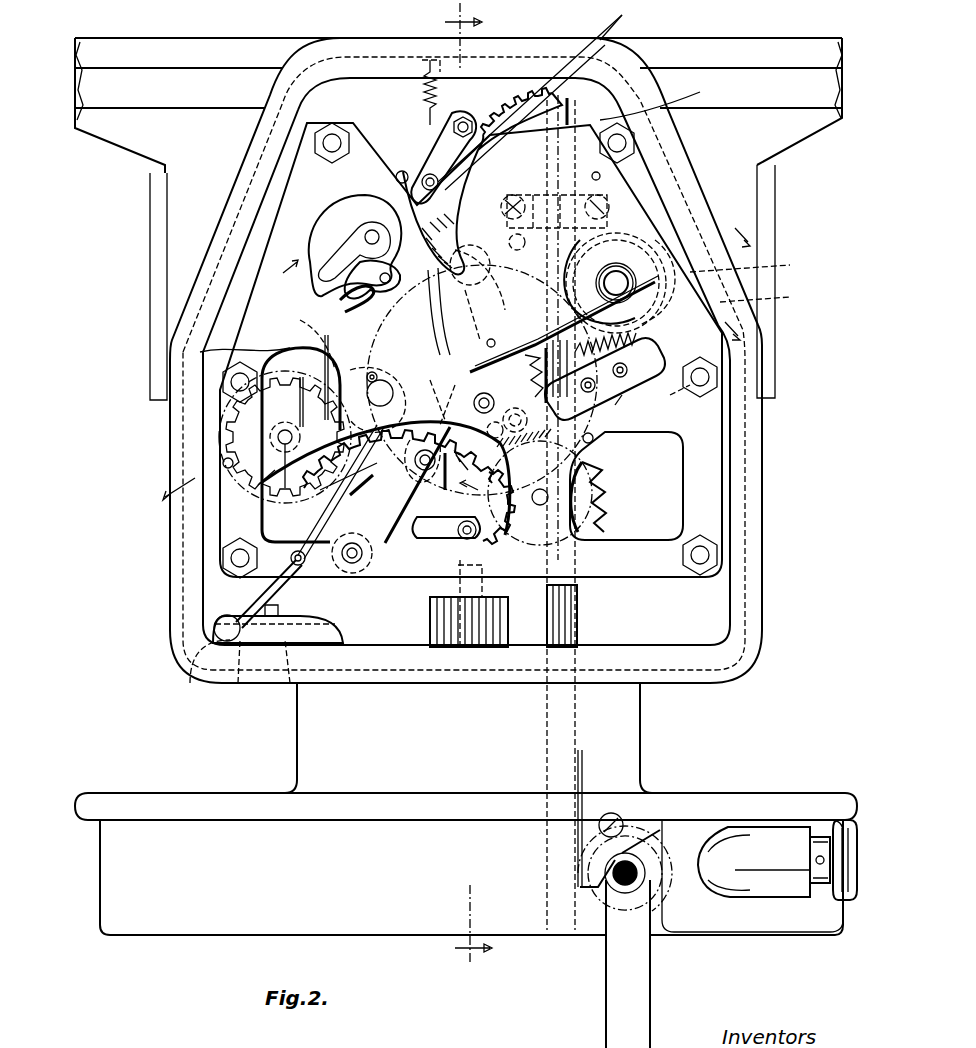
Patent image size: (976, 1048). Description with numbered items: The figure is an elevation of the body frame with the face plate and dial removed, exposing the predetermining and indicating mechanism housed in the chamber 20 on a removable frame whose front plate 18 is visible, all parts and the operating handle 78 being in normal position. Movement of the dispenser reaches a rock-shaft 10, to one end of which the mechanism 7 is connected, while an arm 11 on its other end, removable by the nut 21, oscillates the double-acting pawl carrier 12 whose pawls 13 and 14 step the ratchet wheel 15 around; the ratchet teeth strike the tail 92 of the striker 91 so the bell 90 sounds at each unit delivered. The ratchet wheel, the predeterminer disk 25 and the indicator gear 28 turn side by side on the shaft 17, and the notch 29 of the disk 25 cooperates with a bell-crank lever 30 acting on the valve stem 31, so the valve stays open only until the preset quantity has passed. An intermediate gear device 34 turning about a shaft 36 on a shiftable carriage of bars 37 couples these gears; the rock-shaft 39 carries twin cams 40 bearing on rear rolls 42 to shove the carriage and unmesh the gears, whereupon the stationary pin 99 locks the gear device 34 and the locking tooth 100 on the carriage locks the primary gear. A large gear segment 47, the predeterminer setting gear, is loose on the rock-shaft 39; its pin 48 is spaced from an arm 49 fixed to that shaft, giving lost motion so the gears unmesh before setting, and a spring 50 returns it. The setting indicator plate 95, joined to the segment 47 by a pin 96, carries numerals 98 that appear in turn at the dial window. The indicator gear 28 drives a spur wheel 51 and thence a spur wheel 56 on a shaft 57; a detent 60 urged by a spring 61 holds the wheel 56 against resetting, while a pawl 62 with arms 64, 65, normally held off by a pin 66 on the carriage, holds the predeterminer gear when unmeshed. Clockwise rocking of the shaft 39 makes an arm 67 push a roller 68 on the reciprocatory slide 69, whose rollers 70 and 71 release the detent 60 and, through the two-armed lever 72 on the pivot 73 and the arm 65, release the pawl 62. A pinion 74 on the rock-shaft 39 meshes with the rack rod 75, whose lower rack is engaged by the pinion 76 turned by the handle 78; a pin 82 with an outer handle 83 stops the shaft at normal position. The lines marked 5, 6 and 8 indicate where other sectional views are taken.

The section line 5- 5 is at (458, 494).
The section line 6- 6 is at (449, 379).
The mechanism 7 is at (374, 373).
The section line 8- 8 is at (734, 338).
The rock-shaft 10 is at (458, 100).
The arm 11 is at (428, 160).
The double-acting pawl carrier 12 is at (345, 210).
The pawl 13 is at (365, 262).
The pawl 14 is at (482, 370).
The ratchet wheel 15 is at (285, 355).
The shaft 17 is at (368, 394).
The front plate 18 is at (712, 490).
The chamber 20 is at (715, 585).
The nut 21 is at (520, 92).
The predeterminer disk 25 is at (380, 482).
The indicator gear 28 is at (340, 492).
The notch 29 is at (417, 485).
The bell-crank lever 30 is at (447, 528).
The stem 31 is at (470, 570).
The intermediate gear device 34 is at (248, 497).
The shaft 36 is at (285, 448).
The carriage bars 37 is at (265, 437).
The rock-shaft 39 is at (630, 290).
The twin cams 40 is at (633, 230).
The rear rolls 42 is at (690, 250).
The gear segment 47 is at (623, 21).
The pin 48 is at (540, 341).
The arm 49 is at (520, 253).
The spring 50 is at (425, 97).
The spur wheel 51 is at (500, 475).
The spur wheel 56 is at (592, 525).
The shaft 57 is at (548, 497).
The detent 60 is at (602, 467).
The spring 61 is at (648, 400).
The pawl 62 is at (383, 282).
The arm 64 is at (303, 330).
The arm 65 is at (363, 362).
The pin 66 is at (233, 353).
The arm 67 is at (677, 400).
The roller 68 is at (624, 410).
The reciprocatory slide 69 is at (765, 293).
The roller 70 is at (596, 427).
The roller 71 is at (512, 420).
The two-armed lever 72 is at (430, 402).
The pivot 73 is at (398, 459).
The pinion 74 is at (751, 263).
The rod 75 is at (560, 615).
The pinion 76 is at (665, 905).
The operating handle 78 is at (643, 992).
The pin 82 is at (810, 867).
The handle 83 is at (828, 872).
The bell 90 is at (343, 625).
The striker 91 is at (270, 600).
The tail 92 is at (315, 554).
The setting indicator plate 95 is at (625, 112).
The pin 96 is at (598, 176).
The numerals 98 is at (552, 150).
The stationary pin 99 is at (223, 463).
The locking dog 100 is at (480, 280).